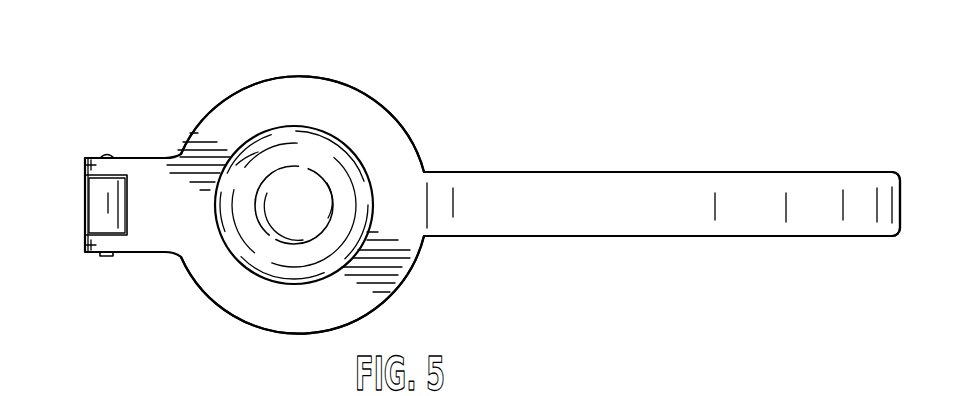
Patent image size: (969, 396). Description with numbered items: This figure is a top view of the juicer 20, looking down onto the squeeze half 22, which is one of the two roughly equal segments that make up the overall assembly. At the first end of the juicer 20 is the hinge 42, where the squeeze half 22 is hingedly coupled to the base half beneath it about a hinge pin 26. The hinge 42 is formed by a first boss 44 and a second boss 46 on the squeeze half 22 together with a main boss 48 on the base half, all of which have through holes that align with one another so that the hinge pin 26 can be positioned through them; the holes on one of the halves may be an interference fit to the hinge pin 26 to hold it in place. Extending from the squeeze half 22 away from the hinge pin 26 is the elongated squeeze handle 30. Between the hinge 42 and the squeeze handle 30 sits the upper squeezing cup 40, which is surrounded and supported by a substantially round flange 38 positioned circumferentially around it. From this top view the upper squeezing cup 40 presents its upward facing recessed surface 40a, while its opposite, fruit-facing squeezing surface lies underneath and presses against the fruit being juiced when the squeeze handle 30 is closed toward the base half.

The juicer 20 is at (473, 126).
The squeeze half 22 is at (565, 237).
The hinge pin 26 is at (107, 152).
The squeeze handle 30 is at (618, 183).
The substantially round flange 38 is at (353, 105).
The upper squeezing cup 40 is at (283, 126).
The upward facing recessed surface 40a is at (252, 157).
The hinge 42 is at (110, 258).
The first boss 44 is at (82, 164).
The second boss 46 is at (97, 243).
The main boss 48 is at (93, 212).